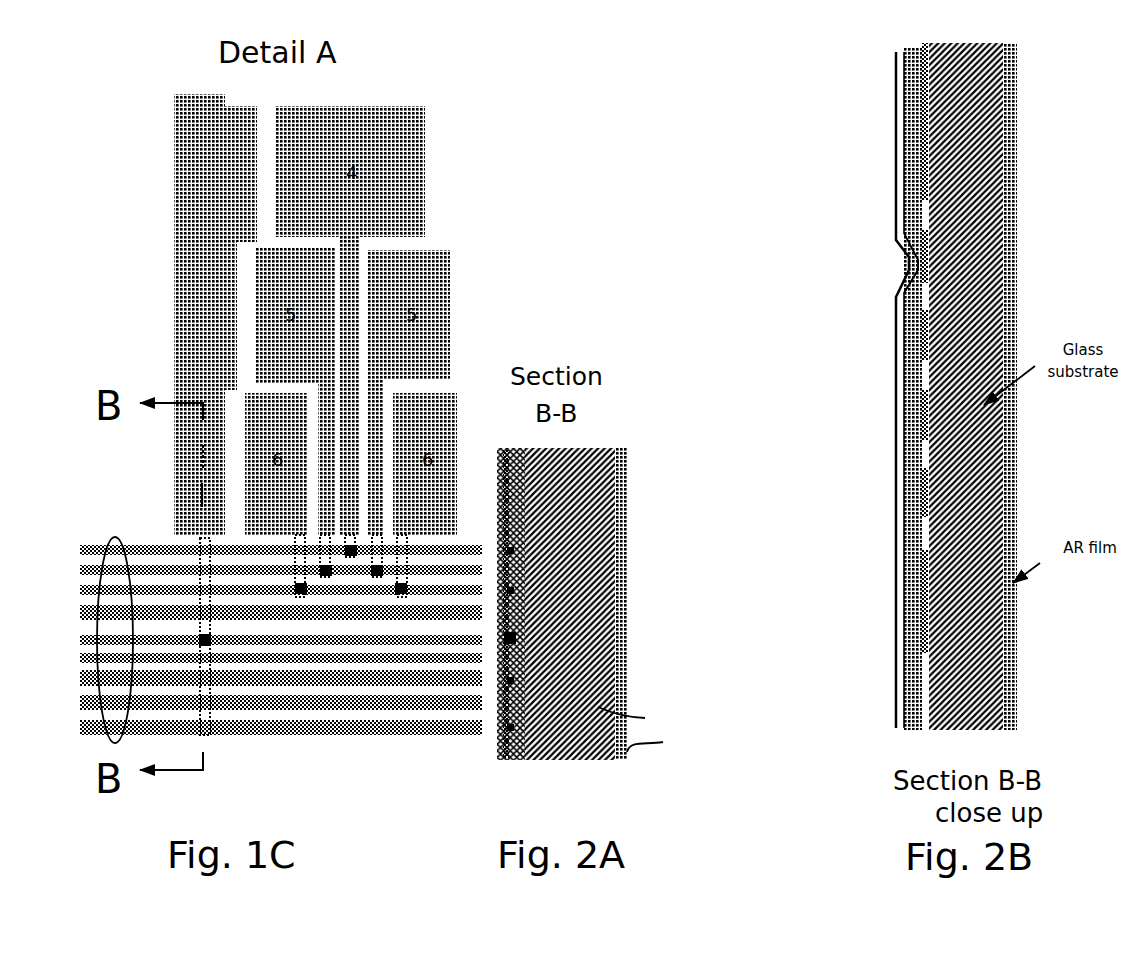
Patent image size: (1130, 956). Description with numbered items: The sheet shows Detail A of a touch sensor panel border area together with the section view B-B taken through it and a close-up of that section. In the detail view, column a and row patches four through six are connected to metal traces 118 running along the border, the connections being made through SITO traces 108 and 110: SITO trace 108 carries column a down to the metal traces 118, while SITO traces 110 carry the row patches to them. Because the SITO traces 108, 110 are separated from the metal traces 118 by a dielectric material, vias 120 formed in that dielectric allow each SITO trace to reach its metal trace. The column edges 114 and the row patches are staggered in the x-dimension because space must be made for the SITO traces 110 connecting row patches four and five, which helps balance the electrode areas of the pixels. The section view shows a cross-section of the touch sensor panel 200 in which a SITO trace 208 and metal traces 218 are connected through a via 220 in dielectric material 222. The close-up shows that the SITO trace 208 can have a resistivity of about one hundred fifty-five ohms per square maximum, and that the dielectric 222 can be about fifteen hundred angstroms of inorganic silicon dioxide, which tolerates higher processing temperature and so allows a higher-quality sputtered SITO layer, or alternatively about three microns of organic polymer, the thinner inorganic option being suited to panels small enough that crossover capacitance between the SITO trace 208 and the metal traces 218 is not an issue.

In FIG. 1C, the SITO trace 108 is at (203, 563).
In FIG. 1C, the SITO trace 110 is at (410, 563).
In FIG. 1C, the column edge 114 is at (225, 410).
In FIG. 1C, the metal traces 118 is at (118, 540).
In FIG. 1C, the via 120 is at (215, 648).
In FIG. 2A, the touch sensor panel 200 is at (609, 514).
In FIG. 2A, the SITO trace 208 is at (500, 460).
In FIG. 2B, the SITO trace 208 is at (790, 390).
In FIG. 2A, the metal traces 218 is at (522, 587).
In FIG. 2B, the metal traces 218 is at (796, 348).
In FIG. 2A, the via 220 is at (510, 637).
In FIG. 2B, the via 220 is at (784, 253).
In FIG. 2A, the dielectric material 222 is at (523, 537).
In FIG. 2B, the dielectric material 222 is at (792, 389).